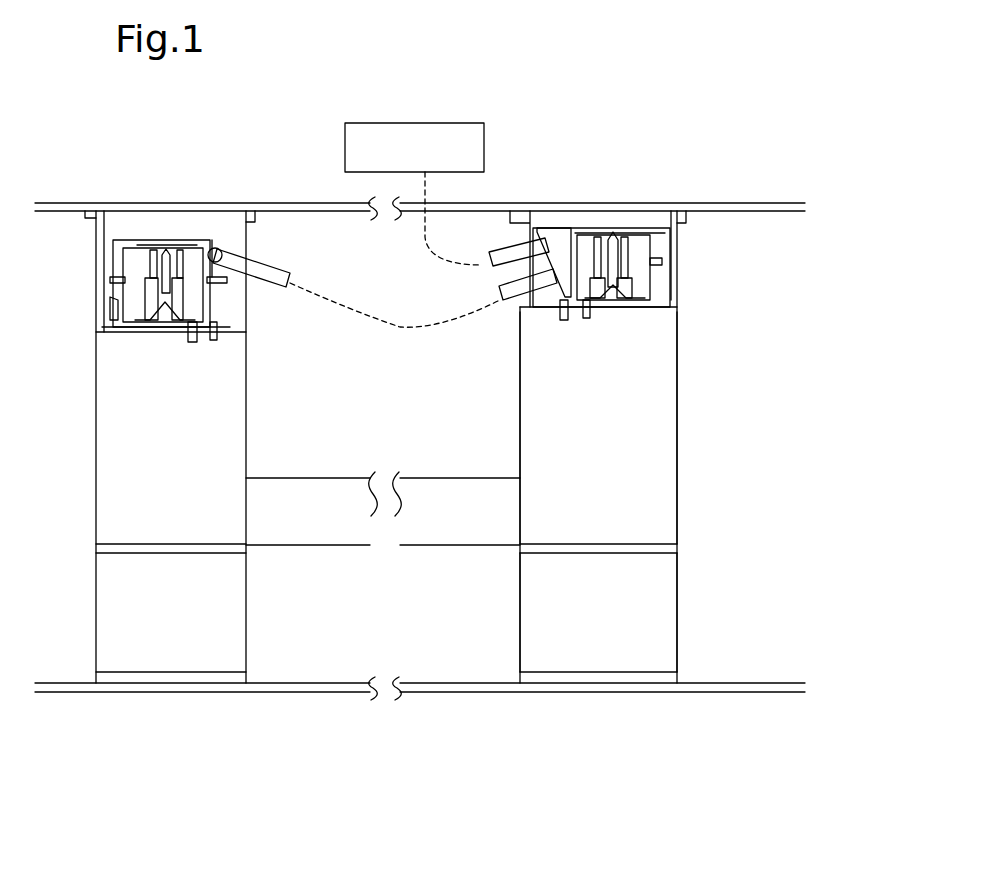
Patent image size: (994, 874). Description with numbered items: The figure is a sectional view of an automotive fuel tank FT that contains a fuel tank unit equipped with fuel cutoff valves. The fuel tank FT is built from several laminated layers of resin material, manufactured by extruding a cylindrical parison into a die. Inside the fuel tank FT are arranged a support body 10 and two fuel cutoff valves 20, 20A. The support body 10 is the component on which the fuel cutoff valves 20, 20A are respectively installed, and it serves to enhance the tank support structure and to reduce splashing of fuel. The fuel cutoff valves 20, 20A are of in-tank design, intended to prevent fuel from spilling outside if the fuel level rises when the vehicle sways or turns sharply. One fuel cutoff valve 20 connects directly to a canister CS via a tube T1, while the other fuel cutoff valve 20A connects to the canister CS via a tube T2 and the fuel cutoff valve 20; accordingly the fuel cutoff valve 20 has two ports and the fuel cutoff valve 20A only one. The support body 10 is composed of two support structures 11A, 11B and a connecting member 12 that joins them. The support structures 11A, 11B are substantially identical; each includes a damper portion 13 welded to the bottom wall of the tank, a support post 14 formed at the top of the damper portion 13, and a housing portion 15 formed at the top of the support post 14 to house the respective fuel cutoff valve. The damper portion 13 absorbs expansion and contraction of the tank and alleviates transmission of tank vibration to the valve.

The canister CS is at (484, 145).
The fuel tank FT is at (742, 203).
The tube T1 is at (430, 248).
The tube T2 is at (380, 327).
The support body 10 is at (462, 534).
The support structure 11A is at (664, 506).
The support structure 11B is at (212, 506).
The connecting member 12 is at (438, 477).
The damper portion 13 is at (677, 605).
The support post 14 is at (677, 472).
The housing portion 15 is at (680, 297).
The fuel cutoff valve 20 is at (680, 230).
The fuel cutoff valve 20A is at (212, 307).